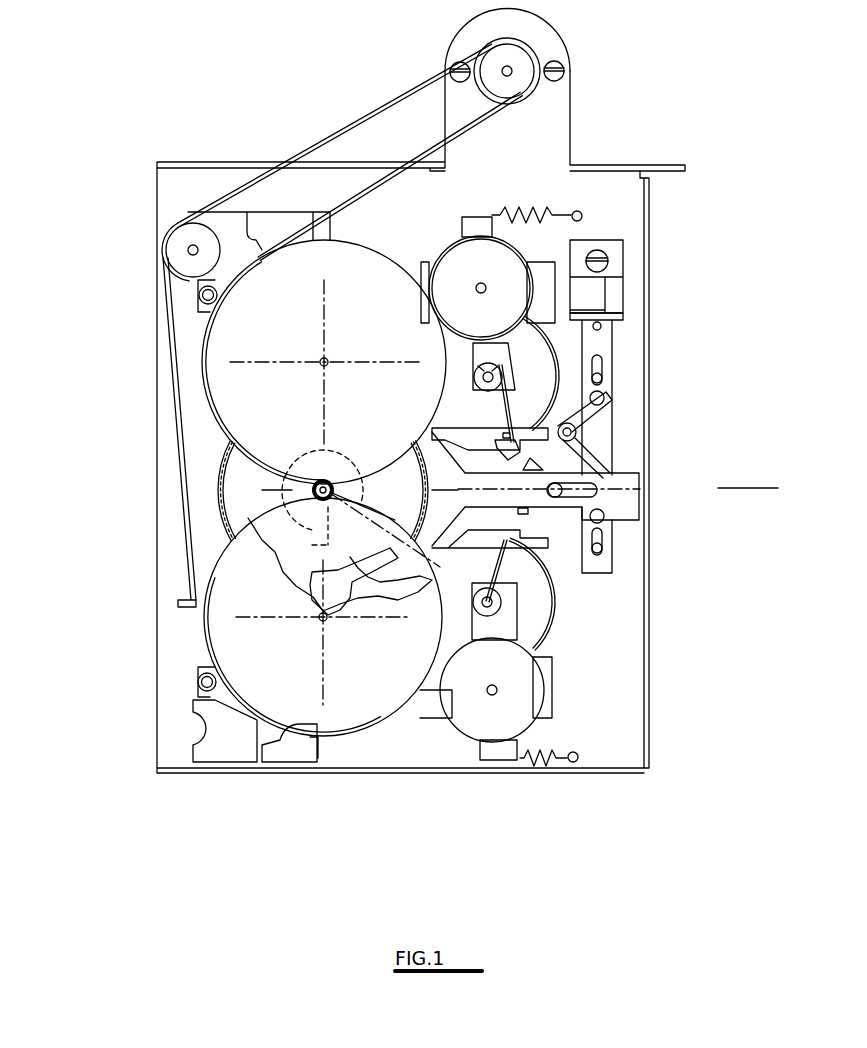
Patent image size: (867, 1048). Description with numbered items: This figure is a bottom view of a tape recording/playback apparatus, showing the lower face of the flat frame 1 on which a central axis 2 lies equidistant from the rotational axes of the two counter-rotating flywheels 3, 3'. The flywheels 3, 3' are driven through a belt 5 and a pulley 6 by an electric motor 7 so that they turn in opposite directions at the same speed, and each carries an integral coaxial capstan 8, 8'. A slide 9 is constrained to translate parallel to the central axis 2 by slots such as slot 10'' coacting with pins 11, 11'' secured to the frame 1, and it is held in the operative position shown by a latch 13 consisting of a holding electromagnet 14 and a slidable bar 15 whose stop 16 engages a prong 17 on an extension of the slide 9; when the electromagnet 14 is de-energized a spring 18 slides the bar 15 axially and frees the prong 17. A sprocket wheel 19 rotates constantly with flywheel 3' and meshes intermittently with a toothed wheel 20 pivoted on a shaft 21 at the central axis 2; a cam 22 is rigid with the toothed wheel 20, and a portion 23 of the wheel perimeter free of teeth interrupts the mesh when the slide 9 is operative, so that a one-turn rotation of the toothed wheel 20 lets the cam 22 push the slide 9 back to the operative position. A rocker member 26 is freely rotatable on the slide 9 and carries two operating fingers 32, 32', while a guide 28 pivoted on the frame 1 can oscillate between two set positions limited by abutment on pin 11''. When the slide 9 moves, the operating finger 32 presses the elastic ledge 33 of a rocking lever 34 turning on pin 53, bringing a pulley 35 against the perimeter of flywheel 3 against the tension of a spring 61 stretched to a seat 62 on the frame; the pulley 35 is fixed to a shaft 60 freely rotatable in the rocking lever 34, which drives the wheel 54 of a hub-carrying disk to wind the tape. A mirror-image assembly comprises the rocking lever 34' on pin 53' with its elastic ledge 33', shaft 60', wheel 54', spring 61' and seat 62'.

The frame 1 is at (612, 185).
The central axis 2 is at (618, 470).
The flywheel 3 is at (277, 362).
The flywheel 3' is at (267, 617).
The belt 5 is at (378, 107).
The pulley 6 is at (185, 232).
The electric motor 7 is at (520, 68).
The capstan 8 is at (326, 362).
The capstan 8' is at (323, 632).
The slide 9 is at (203, 663).
The slot 10'' is at (630, 501).
The pin 11 is at (205, 521).
The pin 11'' is at (630, 485).
The latch 13 is at (608, 345).
The holding electromagnet 14 is at (598, 290).
The slidable bar 15 is at (602, 560).
The stop 16 is at (600, 522).
The prong 17 is at (628, 510).
The spring 18 is at (600, 422).
The sprocket wheel 19 is at (365, 600).
The toothed wheel 20 is at (235, 492).
The shaft 21 is at (330, 484).
The cam 22 is at (345, 489).
The portion free of teeth 23 is at (340, 570).
The rocker member 26 is at (560, 455).
The guide 28 is at (540, 480).
The operating finger 32 is at (499, 433).
The operating finger 32' is at (542, 523).
The elastic ledge 33 is at (524, 403).
The elastic ledge 33' is at (544, 572).
The rocking lever 34 is at (478, 194).
The rocking lever 34' is at (561, 695).
The pulley 35 is at (464, 252).
The pin 53 is at (455, 367).
The pin 53' is at (485, 598).
The wheel 54 is at (611, 353).
The wheel 54' is at (608, 594).
The shaft 60 is at (441, 251).
The shaft 60' is at (486, 726).
The spring 61 is at (531, 177).
The spring 61' is at (543, 792).
The seat 62 is at (587, 171).
The seat 62' is at (595, 793).